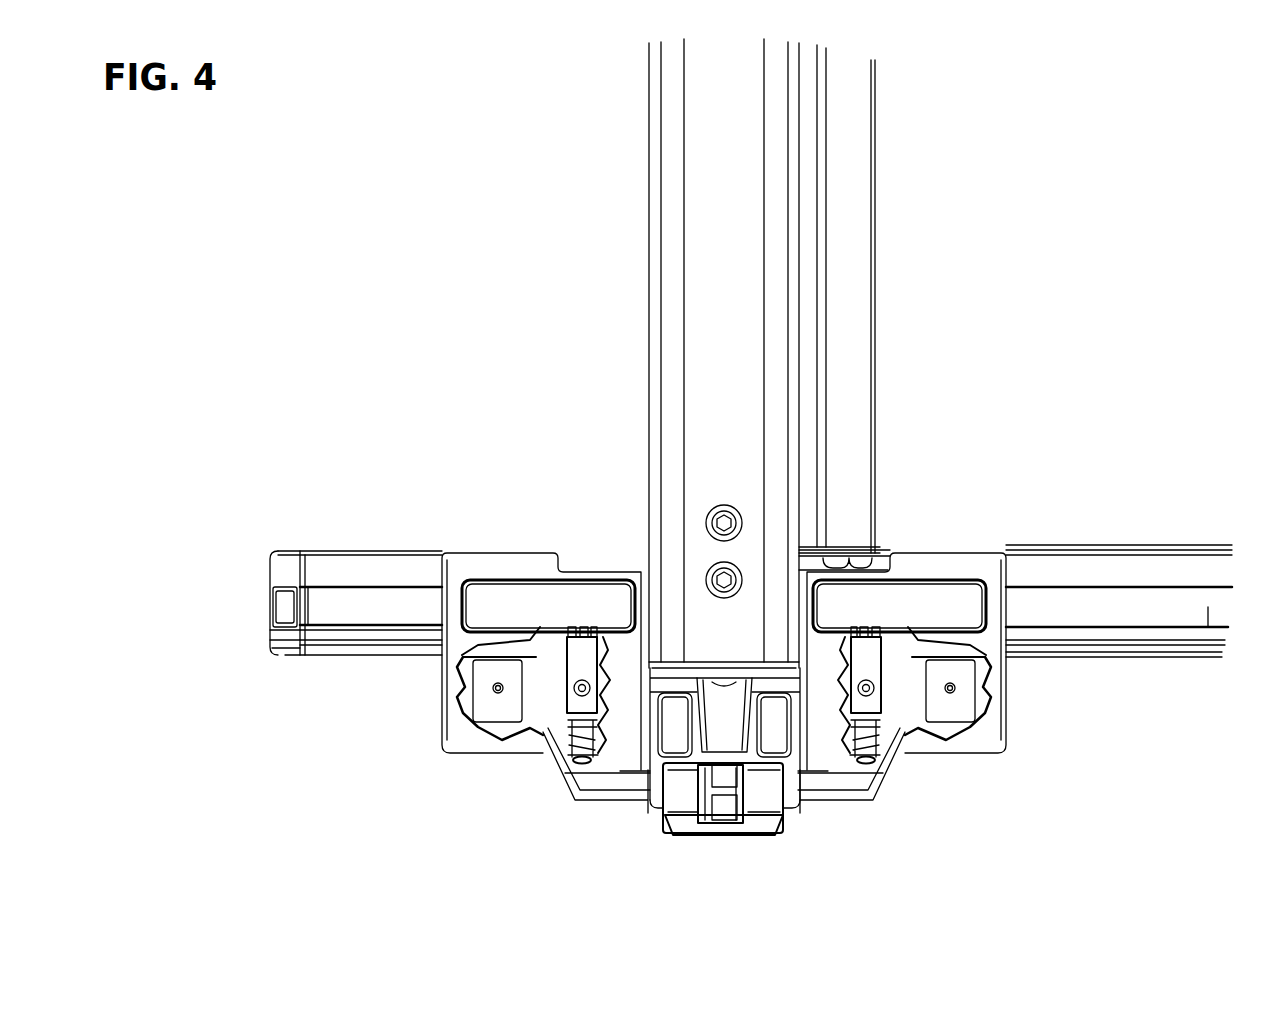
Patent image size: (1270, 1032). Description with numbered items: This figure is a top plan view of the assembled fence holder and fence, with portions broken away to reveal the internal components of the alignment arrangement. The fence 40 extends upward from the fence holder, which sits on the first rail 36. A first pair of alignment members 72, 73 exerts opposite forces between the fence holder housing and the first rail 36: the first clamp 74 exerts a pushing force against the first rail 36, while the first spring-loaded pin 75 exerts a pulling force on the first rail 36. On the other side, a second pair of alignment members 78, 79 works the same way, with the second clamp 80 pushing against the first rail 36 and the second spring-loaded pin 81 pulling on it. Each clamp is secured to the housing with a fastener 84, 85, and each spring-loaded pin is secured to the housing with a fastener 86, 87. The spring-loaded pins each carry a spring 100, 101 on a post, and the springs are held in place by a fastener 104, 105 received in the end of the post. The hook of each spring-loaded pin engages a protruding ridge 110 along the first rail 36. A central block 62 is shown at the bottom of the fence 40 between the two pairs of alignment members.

The post 40 is at (706, 282).
The first rail 36 is at (332, 618).
The protruding ridge 110 is at (1115, 638).
The center connector block 62 is at (727, 835).
The first alignment member 72 is at (446, 768).
The first clamp 74 is at (482, 713).
The fastener 84 is at (493, 688).
The first spring-loaded pin 75 is at (567, 708).
The fastener 86 is at (577, 687).
The spring 100 is at (597, 753).
The fastener 104 is at (582, 763).
The first alignment member 73 is at (537, 810).
The second alignment member 78 is at (1012, 775).
The second clamp 80 is at (965, 715).
The fastener 85 is at (955, 688).
The second spring-loaded pin 81 is at (878, 707).
The fastener 87 is at (862, 688).
The spring 101 is at (858, 747).
The fastener 105 is at (877, 767).
The second alignment member 79 is at (907, 807).